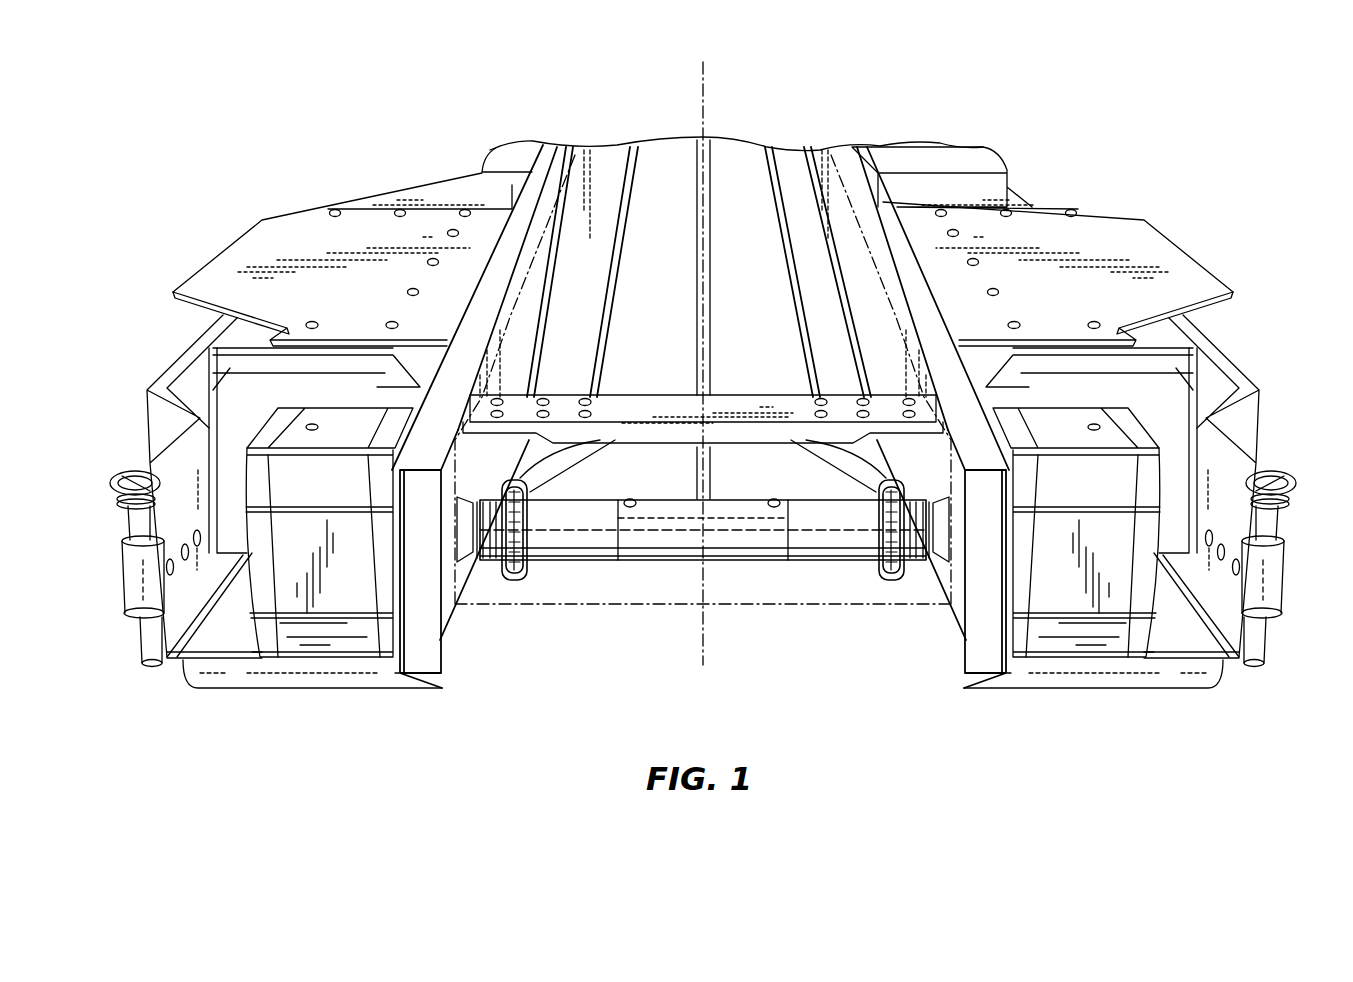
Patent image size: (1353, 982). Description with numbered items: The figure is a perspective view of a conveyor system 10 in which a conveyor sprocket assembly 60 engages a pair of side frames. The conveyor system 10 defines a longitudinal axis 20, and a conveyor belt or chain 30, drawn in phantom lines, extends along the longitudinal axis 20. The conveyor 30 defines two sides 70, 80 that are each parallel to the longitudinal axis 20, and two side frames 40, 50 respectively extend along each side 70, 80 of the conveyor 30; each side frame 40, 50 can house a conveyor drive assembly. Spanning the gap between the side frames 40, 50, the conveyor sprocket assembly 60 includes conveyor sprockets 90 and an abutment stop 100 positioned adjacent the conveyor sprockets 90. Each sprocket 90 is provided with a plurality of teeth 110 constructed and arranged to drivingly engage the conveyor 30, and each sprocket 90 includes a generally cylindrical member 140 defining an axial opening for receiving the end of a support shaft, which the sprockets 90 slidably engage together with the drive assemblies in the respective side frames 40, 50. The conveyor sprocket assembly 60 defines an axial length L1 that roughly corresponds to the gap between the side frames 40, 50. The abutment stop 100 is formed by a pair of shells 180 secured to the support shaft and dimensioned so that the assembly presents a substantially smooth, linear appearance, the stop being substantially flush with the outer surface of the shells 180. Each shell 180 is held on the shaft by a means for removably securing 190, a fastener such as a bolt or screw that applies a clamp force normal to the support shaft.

The conveyor system 10 is at (1050, 738).
The longitudinal axis 20 is at (702, 100).
The conveyor belt or chain 30 is at (783, 607).
The side frame 40 is at (423, 655).
The side frame 50 is at (975, 655).
The conveyor sprocket assembly 60 is at (619, 572).
The side of the conveyor 70 is at (520, 300).
The side of the conveyor 80 is at (886, 300).
The conveyor sprocket 90 is at (512, 582).
The abutment stop 100 is at (669, 576).
The teeth 110 is at (600, 420).
The generally cylindrical member 140 is at (565, 550).
The shell 180 is at (742, 517).
The means for removably securing 190 is at (629, 497).
The axial length L1 is at (570, 527).